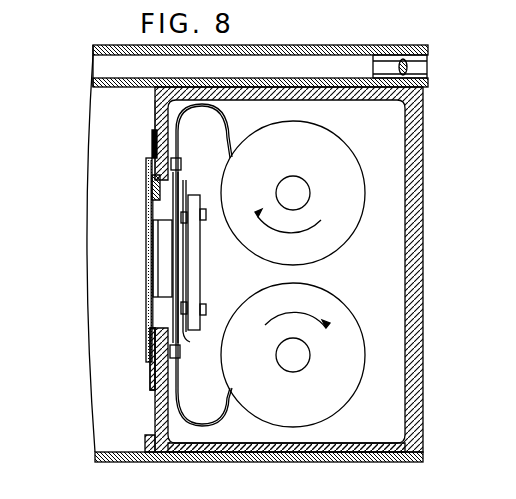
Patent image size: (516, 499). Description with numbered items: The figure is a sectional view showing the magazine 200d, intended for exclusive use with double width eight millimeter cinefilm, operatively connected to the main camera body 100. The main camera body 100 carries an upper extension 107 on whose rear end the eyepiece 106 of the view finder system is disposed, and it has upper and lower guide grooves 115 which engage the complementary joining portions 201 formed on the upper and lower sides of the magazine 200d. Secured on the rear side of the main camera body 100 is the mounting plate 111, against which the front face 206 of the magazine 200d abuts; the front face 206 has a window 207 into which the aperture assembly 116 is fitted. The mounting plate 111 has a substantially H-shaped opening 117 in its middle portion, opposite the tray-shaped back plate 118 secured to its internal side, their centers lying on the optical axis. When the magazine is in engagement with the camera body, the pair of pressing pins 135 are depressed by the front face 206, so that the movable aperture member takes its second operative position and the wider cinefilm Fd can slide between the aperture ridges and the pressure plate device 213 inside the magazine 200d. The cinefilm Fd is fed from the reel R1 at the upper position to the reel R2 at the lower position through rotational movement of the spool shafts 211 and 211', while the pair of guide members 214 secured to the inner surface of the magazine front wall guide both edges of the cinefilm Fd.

The main camera body 100 is at (98, 131).
The upper extension 107 is at (344, 45).
The eyepiece 106 is at (408, 68).
The magazine 200d is at (420, 165).
The mounting plate 111 is at (156, 118).
The guide groove 115 is at (177, 454).
The joining portion 201 is at (203, 454).
The reel R1 is at (346, 167).
The reel R2 is at (351, 327).
The spool shaft 211 is at (311, 364).
The spool shaft 211' is at (315, 193).
The cinefilm Fd is at (192, 110).
The guide members 214 is at (181, 164).
The window 207 is at (152, 186).
The H-shaped opening 117 is at (150, 199).
The pressing pins 135 is at (160, 248).
The back plate 118 is at (147, 318).
The aperture assembly 116 is at (177, 288).
The pressure plate device 213 is at (186, 260).
The front face 206 is at (157, 350).